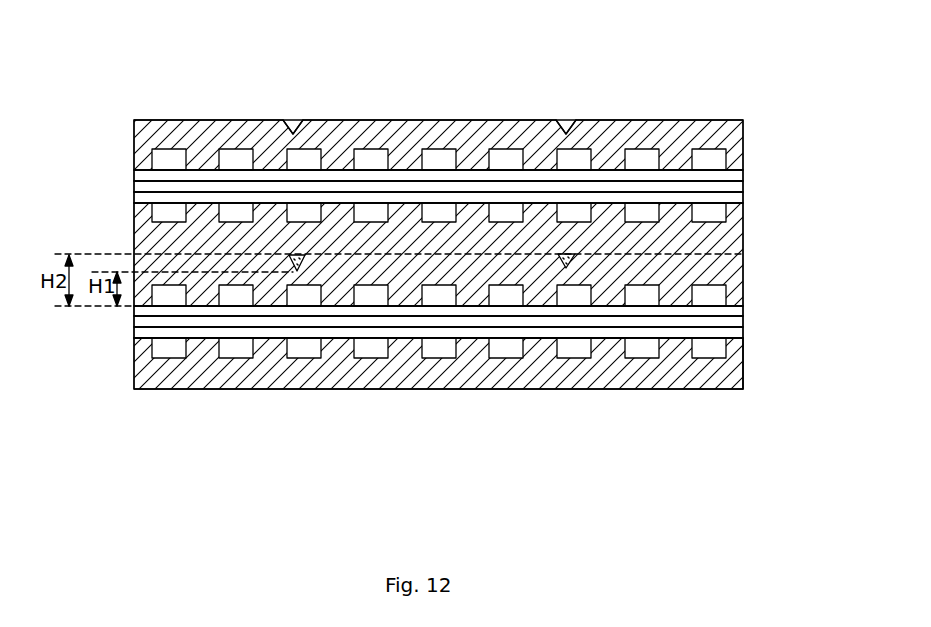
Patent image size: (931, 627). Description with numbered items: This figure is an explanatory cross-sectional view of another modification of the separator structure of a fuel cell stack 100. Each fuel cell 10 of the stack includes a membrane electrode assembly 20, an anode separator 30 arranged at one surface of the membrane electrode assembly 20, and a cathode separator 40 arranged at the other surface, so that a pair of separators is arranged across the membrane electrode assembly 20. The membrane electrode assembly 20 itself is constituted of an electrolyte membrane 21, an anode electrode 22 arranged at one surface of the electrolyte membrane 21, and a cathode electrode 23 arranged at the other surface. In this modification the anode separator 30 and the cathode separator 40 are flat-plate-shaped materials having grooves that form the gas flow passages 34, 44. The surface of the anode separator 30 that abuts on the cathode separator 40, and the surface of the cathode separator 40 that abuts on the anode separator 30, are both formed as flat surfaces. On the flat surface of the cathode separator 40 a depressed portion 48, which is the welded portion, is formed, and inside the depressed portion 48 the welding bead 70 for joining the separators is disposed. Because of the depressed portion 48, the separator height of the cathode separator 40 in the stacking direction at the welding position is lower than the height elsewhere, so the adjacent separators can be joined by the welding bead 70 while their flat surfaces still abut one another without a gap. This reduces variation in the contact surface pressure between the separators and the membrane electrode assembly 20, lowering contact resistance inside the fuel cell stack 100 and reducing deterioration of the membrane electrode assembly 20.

The fuel cell stack 100 is at (128, 79).
The fuel cell 10 is at (197, 117).
The membrane electrode assembly 20 is at (812, 143).
The electrolyte membrane 21 is at (743, 187).
The anode electrode 22 is at (743, 197).
The cathode electrode 23 is at (743, 172).
The anode separator 30 is at (463, 372).
The gas flow passage 34 is at (372, 350).
The cathode separator 40 is at (507, 142).
The gas flow passage 44 is at (441, 158).
The depressed portion 48 is at (293, 121).
The welding bead 70 is at (297, 271).